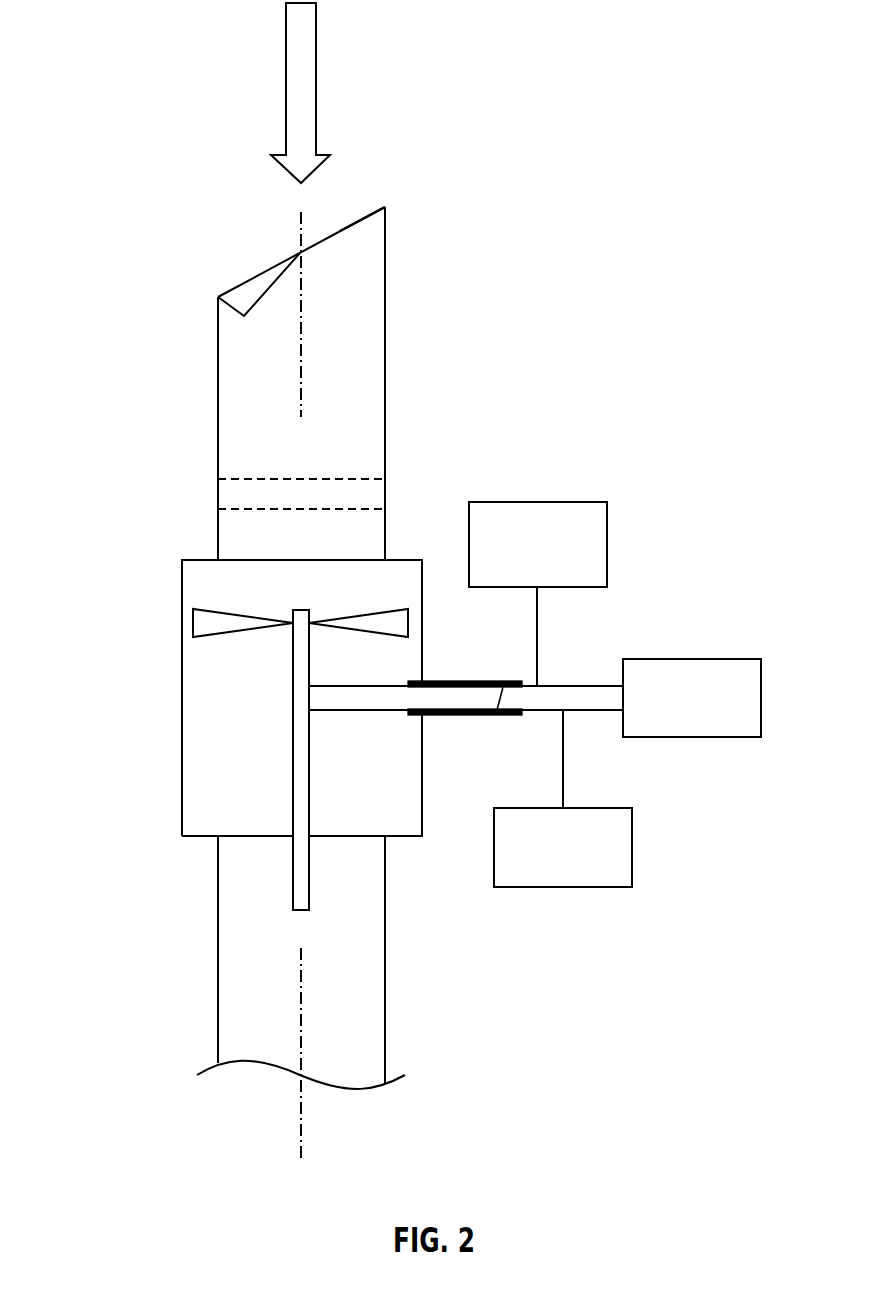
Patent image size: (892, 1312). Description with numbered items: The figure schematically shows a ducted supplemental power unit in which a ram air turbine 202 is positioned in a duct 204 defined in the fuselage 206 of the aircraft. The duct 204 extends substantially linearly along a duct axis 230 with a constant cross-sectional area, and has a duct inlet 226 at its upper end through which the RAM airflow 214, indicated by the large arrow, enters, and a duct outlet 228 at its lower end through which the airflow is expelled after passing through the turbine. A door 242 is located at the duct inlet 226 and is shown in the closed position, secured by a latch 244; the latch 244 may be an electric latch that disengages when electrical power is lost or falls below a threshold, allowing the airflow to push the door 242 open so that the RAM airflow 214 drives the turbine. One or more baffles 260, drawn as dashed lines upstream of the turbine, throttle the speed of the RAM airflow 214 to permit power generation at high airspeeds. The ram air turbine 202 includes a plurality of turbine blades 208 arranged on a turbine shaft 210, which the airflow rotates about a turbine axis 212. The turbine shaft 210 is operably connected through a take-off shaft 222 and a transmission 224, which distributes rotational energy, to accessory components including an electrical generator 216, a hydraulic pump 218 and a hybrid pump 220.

The ram air turbine 202 is at (494, 124).
The duct 204 is at (218, 373).
The fuselage 206 is at (503, 345).
The turbine blades 208 is at (207, 621).
The turbine shaft 210 is at (297, 797).
The turbine axis 212 is at (300, 1130).
The RAM airflow 214 is at (301, 93).
The electrical generator 216 is at (690, 659).
The hydraulic pump 218 is at (536, 502).
The hybrid pump 220 is at (585, 808).
The take-off shaft 222 is at (452, 695).
The transmission 224 is at (577, 695).
The duct inlet 226 is at (370, 283).
The duct outlet 228 is at (233, 1019).
The duct axis 230 is at (302, 372).
The door 242 is at (362, 217).
The latch 244 is at (251, 298).
The baffles 260 is at (240, 497).